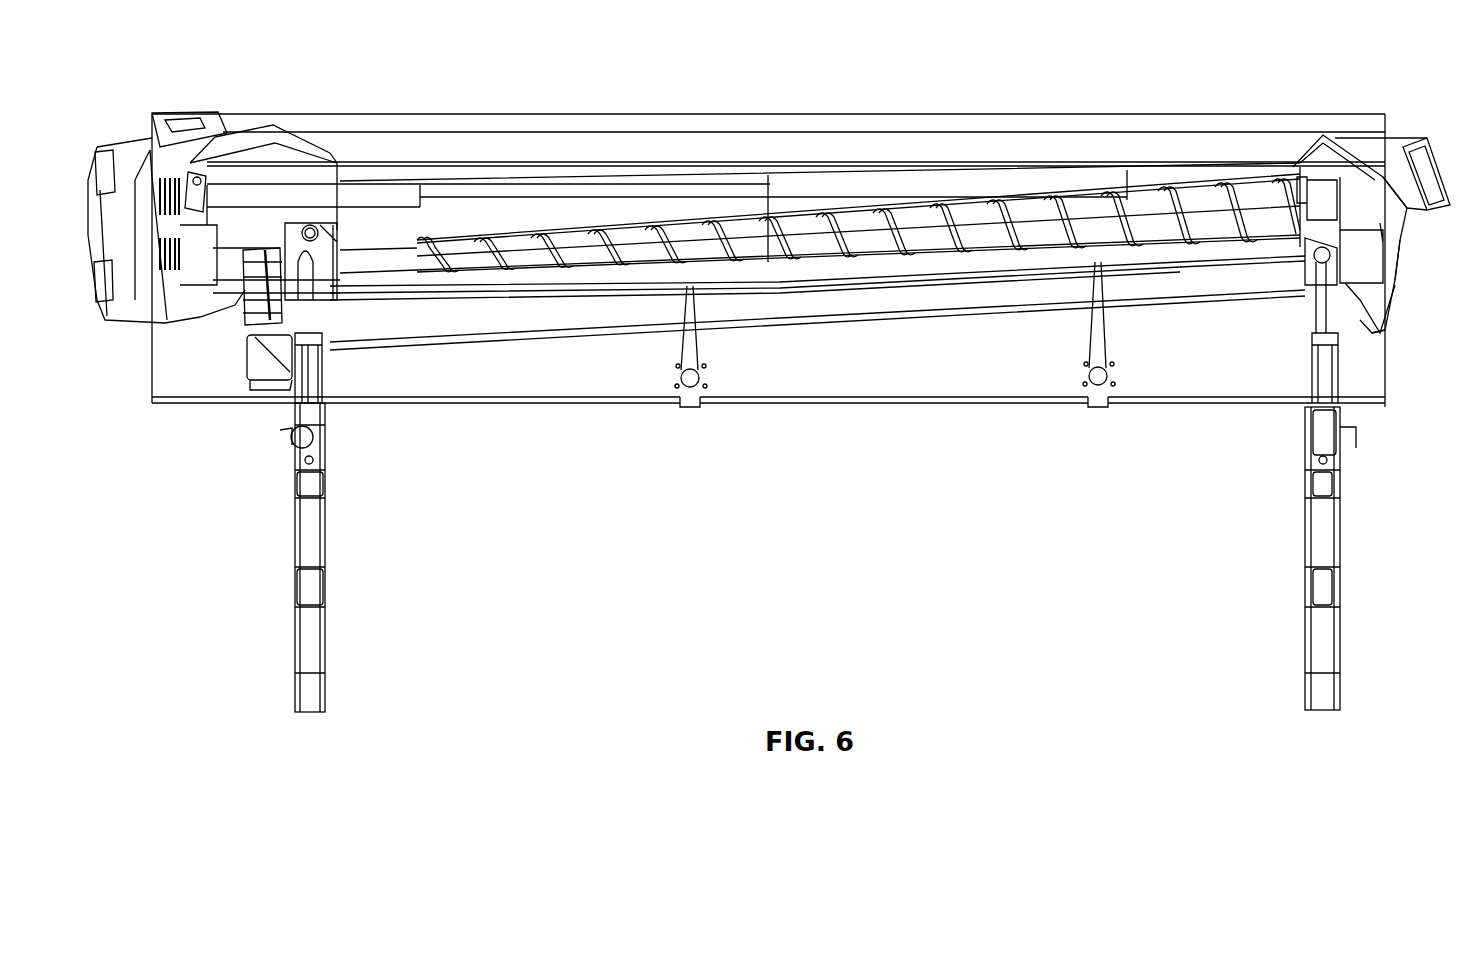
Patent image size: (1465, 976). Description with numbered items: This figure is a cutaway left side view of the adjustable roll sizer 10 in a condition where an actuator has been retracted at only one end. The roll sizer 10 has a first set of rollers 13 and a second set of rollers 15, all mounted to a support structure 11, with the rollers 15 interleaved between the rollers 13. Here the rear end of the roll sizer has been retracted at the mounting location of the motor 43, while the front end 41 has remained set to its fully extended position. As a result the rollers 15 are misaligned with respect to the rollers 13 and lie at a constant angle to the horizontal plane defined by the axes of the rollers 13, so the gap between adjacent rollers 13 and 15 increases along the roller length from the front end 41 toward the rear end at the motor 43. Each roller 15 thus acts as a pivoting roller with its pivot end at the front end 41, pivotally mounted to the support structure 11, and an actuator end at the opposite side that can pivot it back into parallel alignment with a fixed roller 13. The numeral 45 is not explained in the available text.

The adjustable roll sizer 10 is at (636, 47).
The support structure 11 is at (328, 690).
The rollers 13 is at (826, 178).
The rollers 15 is at (1017, 197).
The front end 41 is at (1426, 252).
The motor 43 is at (243, 348).
The auger flight 45 is at (1228, 195).